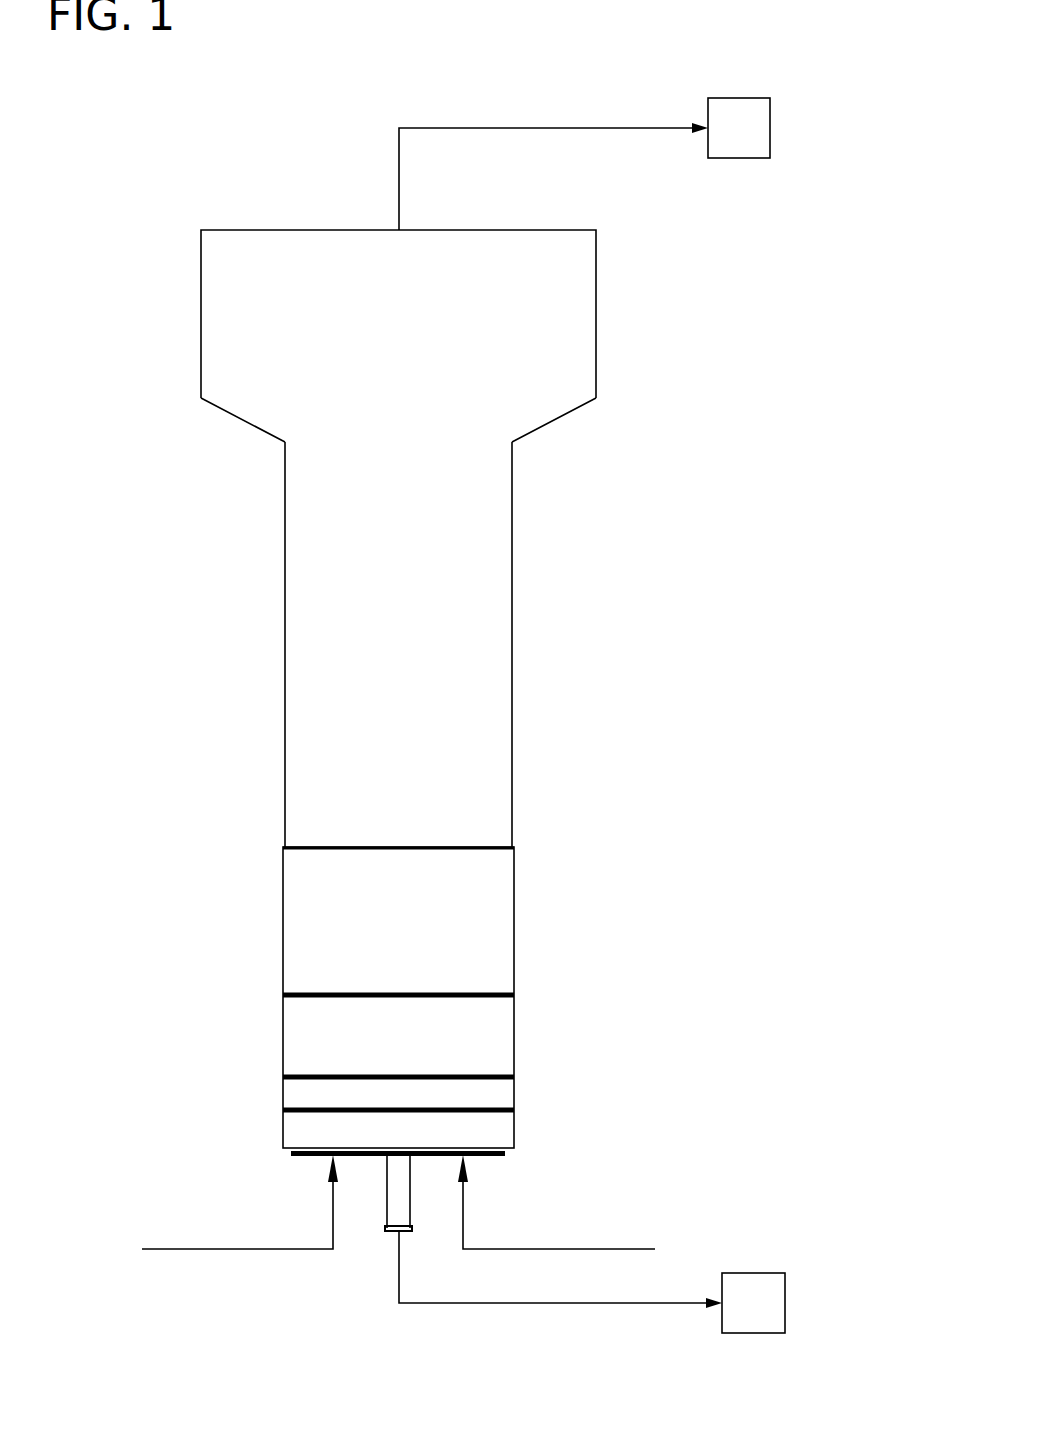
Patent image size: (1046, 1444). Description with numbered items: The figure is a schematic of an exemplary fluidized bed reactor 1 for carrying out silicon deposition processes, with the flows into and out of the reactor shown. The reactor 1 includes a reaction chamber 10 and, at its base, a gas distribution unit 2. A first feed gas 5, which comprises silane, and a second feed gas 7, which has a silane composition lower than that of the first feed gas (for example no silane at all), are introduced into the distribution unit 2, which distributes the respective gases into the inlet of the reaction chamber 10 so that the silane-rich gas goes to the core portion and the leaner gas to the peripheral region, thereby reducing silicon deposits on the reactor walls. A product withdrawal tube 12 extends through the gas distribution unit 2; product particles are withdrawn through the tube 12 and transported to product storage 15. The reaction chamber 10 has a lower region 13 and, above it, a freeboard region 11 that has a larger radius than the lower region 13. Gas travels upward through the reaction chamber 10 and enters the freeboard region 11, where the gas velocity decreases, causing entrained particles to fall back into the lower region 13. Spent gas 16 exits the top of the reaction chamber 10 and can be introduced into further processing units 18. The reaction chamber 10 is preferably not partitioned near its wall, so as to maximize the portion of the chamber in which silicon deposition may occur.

The fluidized bed reactor 1 is at (152, 170).
The gas distribution unit 2 is at (522, 912).
The first feed gas 5 is at (198, 1249).
The second feed gas 7 is at (557, 1249).
The reaction chamber 10 is at (553, 420).
The freeboard region 11 is at (596, 313).
The product withdrawal tube 12 is at (388, 1213).
The lower region 13 is at (512, 728).
The product storage 15 is at (592, 1282).
The spent gas 16 is at (555, 128).
The further processing units 18 is at (739, 128).